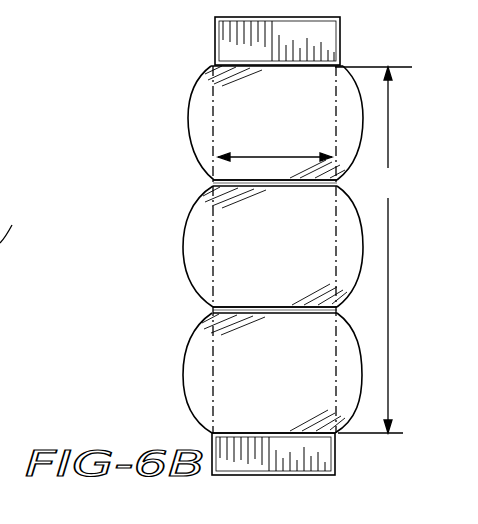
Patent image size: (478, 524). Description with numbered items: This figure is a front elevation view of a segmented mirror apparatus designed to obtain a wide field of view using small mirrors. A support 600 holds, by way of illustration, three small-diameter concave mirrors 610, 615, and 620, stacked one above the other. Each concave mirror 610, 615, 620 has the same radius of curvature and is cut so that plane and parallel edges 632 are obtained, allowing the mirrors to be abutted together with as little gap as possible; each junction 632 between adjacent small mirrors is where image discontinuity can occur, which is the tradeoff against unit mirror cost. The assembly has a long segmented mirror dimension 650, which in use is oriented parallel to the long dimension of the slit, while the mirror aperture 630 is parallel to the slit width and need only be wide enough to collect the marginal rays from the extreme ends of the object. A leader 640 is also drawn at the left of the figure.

The support 600 is at (327, 457).
The concave mirror 610 is at (227, 388).
The concave mirror 615 is at (223, 249).
The concave mirror 620 is at (215, 80).
The mirror aperture 630 is at (268, 157).
The plane and parallel edges 632 is at (281, 187).
The adjacent element 640 is at (15, 224).
The long segmented mirror dimension 650 is at (373, 250).